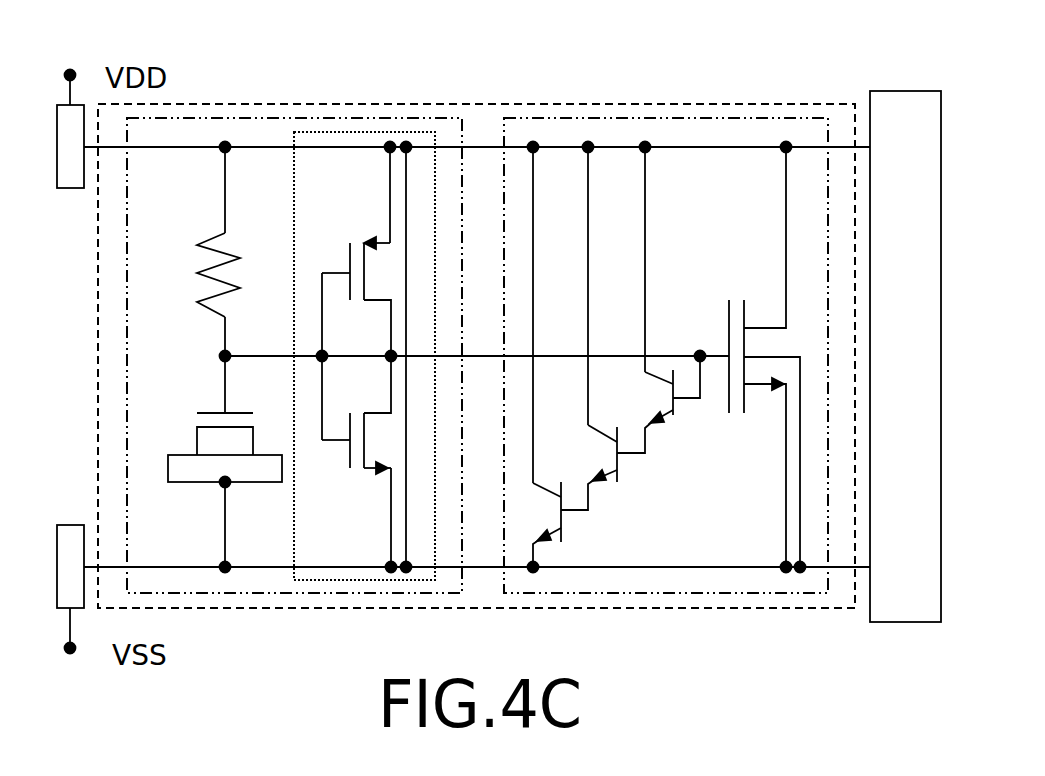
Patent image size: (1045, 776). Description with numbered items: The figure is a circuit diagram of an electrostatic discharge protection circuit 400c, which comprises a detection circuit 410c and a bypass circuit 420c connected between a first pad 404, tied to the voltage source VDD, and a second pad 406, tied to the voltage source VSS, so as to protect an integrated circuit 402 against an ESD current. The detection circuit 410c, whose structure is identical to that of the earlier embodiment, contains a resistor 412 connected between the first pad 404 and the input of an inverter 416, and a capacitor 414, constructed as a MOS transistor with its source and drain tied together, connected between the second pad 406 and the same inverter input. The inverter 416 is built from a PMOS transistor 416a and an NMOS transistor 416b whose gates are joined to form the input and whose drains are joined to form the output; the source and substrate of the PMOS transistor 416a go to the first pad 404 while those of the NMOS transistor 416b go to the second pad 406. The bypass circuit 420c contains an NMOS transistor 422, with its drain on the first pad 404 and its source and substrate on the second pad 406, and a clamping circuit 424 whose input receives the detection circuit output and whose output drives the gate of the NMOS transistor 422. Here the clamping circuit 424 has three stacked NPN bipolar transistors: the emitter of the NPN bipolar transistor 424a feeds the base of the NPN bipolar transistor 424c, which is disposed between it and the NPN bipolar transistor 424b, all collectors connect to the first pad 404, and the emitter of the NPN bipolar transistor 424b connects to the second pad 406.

The ESD protection circuit 400c is at (620, 608).
The integrated circuit 402 is at (905, 622).
The first pad 404 is at (74, 190).
The second pad 406 is at (70, 523).
The detection circuit 410c is at (208, 117).
The resistor 412 is at (207, 222).
The capacitor 414 is at (197, 413).
The inverter 416 is at (338, 132).
The PMOS transistor 416a is at (350, 256).
The NMOS transistor 416b is at (350, 462).
The bypass circuit 420c is at (578, 117).
The NMOS transistor 422 is at (730, 316).
The clamping circuit 424 is at (730, 443).
The NPN bipolar transistor 424a is at (673, 416).
The NPN bipolar transistor 424b is at (561, 544).
The NPN bipolar transistor 424c is at (617, 484).